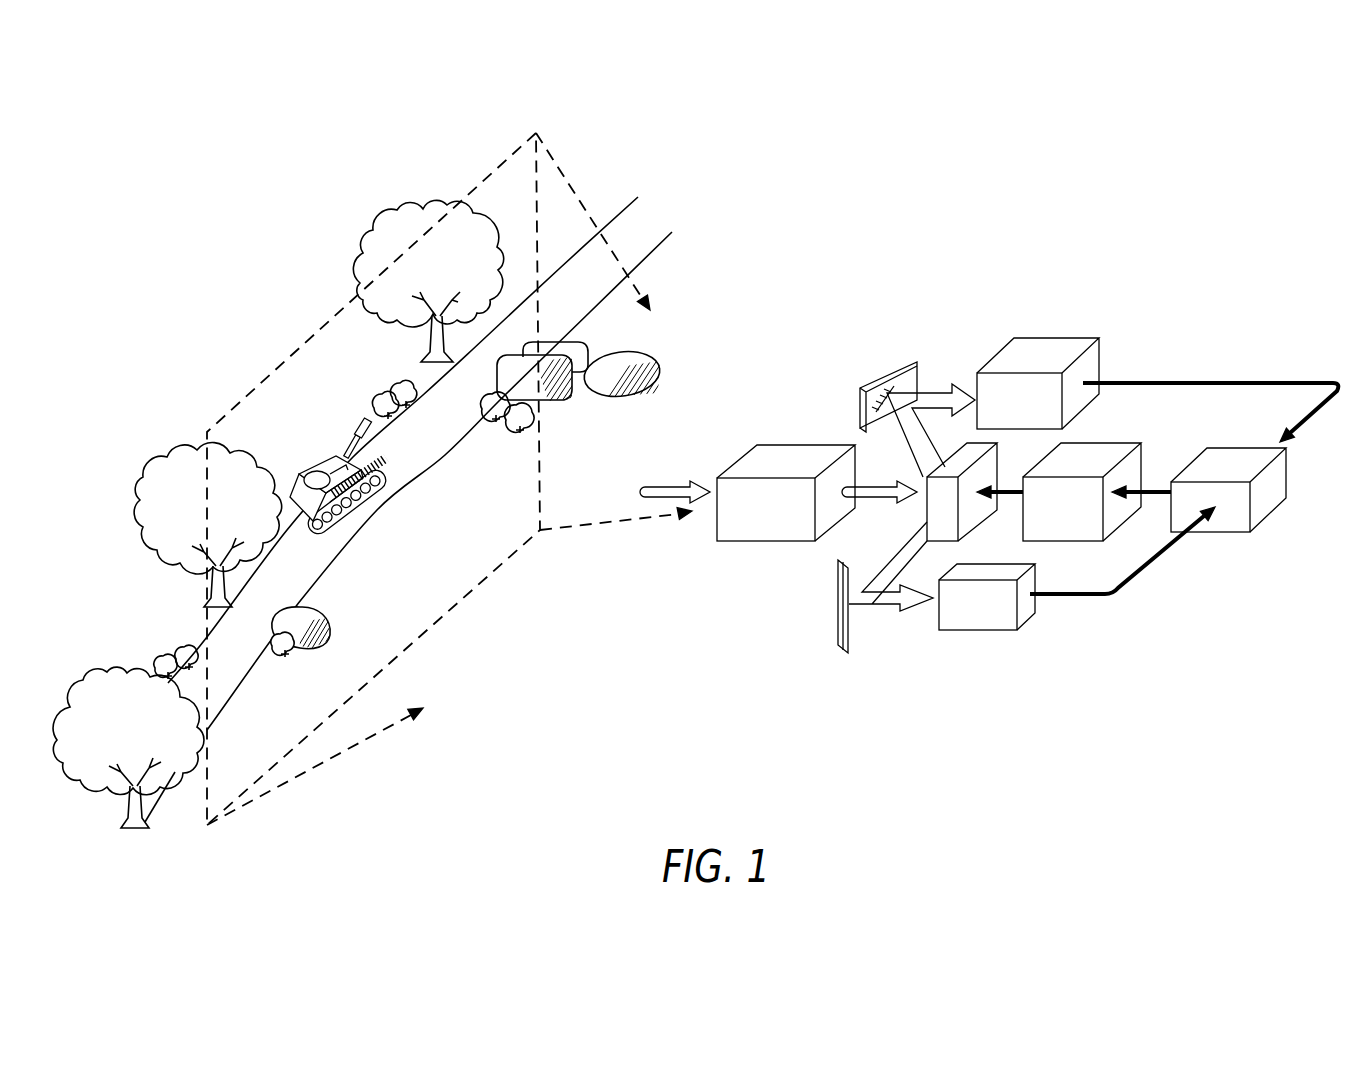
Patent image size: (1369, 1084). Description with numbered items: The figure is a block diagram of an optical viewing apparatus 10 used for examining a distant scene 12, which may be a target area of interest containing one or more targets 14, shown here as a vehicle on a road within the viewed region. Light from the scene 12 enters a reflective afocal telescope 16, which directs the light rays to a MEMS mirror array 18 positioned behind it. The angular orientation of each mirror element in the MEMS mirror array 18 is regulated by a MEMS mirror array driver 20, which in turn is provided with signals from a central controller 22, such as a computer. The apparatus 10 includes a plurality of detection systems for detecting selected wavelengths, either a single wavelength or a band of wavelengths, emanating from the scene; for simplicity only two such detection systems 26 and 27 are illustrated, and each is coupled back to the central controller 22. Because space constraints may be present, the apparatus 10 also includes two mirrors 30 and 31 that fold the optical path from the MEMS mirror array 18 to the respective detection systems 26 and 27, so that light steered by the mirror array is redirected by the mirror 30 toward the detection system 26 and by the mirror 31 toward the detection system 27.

The optical viewing apparatus 10 is at (1127, 272).
The distant scene 12 is at (317, 327).
The target 14 is at (378, 500).
The reflective afocal telescope 16 is at (755, 540).
The MEMS mirror array 18 is at (988, 472).
The MEMS mirror array driver 20 is at (1098, 447).
The central controller 22 is at (1230, 520).
The detection system 26 is at (1038, 347).
The detection system 27 is at (980, 621).
The mirror 30 is at (875, 385).
The mirror 31 is at (840, 606).